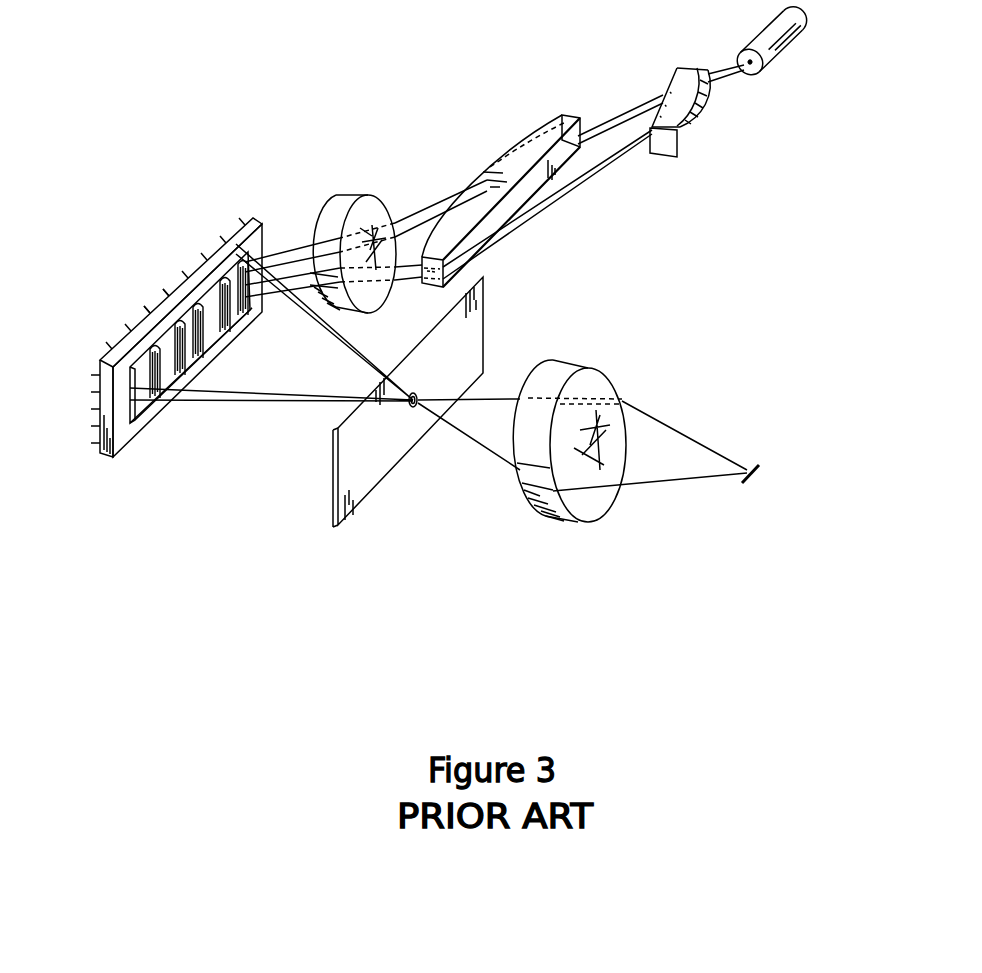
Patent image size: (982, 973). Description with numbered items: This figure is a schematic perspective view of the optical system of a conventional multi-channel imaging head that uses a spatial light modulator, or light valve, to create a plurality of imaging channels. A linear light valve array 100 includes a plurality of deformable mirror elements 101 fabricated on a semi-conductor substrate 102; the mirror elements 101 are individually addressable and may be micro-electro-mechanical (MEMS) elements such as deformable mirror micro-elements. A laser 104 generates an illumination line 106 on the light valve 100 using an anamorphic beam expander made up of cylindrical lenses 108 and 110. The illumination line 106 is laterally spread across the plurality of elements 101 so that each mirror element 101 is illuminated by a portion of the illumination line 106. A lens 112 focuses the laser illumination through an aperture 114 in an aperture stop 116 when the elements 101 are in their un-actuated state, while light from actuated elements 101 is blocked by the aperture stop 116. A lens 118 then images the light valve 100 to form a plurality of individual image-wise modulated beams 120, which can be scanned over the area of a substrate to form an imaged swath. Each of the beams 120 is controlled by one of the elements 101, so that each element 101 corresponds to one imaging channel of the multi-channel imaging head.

The linear light valve array 100 is at (172, 274).
The deformable mirror elements 101 is at (158, 310).
The semi-conductor substrate 102 is at (243, 220).
The laser 104 is at (768, 21).
The illumination line 106 is at (212, 343).
The cylindrical lens 108 is at (677, 68).
The cylindrical lens 110 is at (545, 120).
The lens 112 is at (336, 205).
The aperture 114 is at (417, 408).
The aperture stop 116 is at (488, 316).
The lens 118 is at (548, 380).
The image-wise modulated beams 120 is at (747, 462).